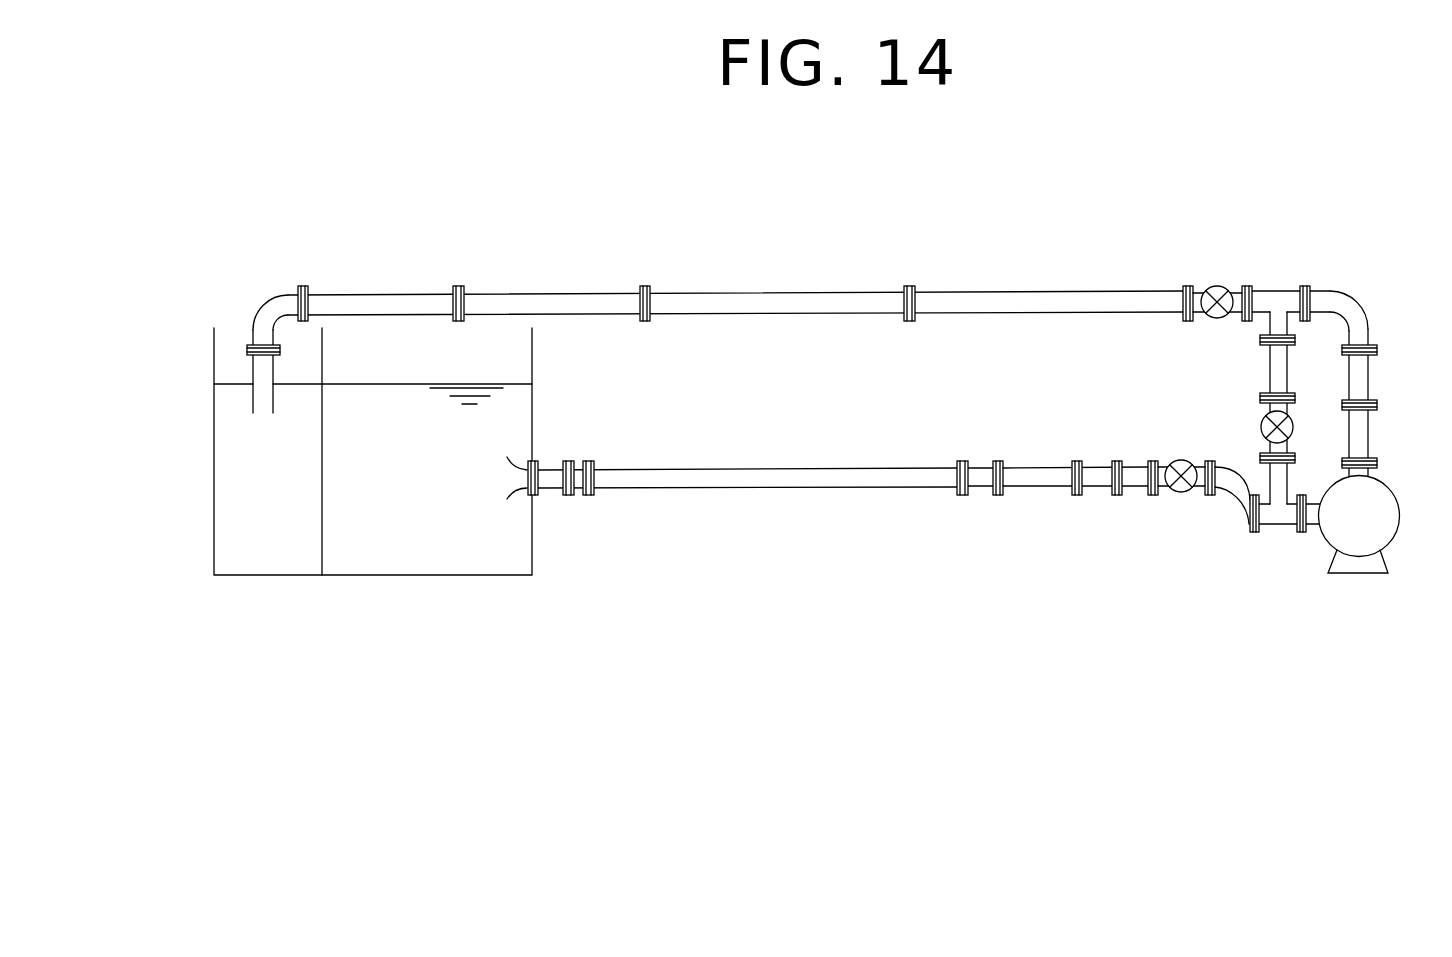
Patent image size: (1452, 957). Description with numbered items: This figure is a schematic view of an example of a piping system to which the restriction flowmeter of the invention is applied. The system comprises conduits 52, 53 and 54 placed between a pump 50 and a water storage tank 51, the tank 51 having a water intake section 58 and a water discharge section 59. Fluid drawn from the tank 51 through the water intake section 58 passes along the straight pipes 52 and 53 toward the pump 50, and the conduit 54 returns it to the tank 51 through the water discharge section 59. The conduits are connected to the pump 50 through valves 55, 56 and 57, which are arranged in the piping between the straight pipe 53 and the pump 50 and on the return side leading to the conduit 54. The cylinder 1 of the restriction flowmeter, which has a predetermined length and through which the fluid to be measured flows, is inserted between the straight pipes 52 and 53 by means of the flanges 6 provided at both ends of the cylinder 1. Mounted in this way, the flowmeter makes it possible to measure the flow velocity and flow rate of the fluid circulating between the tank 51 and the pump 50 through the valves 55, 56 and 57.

The cylinder 1 is at (983, 467).
The flanges 6 is at (961, 495).
The pump 50 is at (1378, 495).
The water storage tank 51 is at (214, 490).
The straight pipe 52 is at (684, 478).
The straight pipe 53 is at (1042, 470).
The conduit 54 is at (806, 300).
The valve 55 is at (1176, 461).
The valve 56 is at (1260, 428).
The valve 57 is at (1217, 287).
The water intake section 58 is at (520, 492).
The water discharge section 59 is at (262, 368).